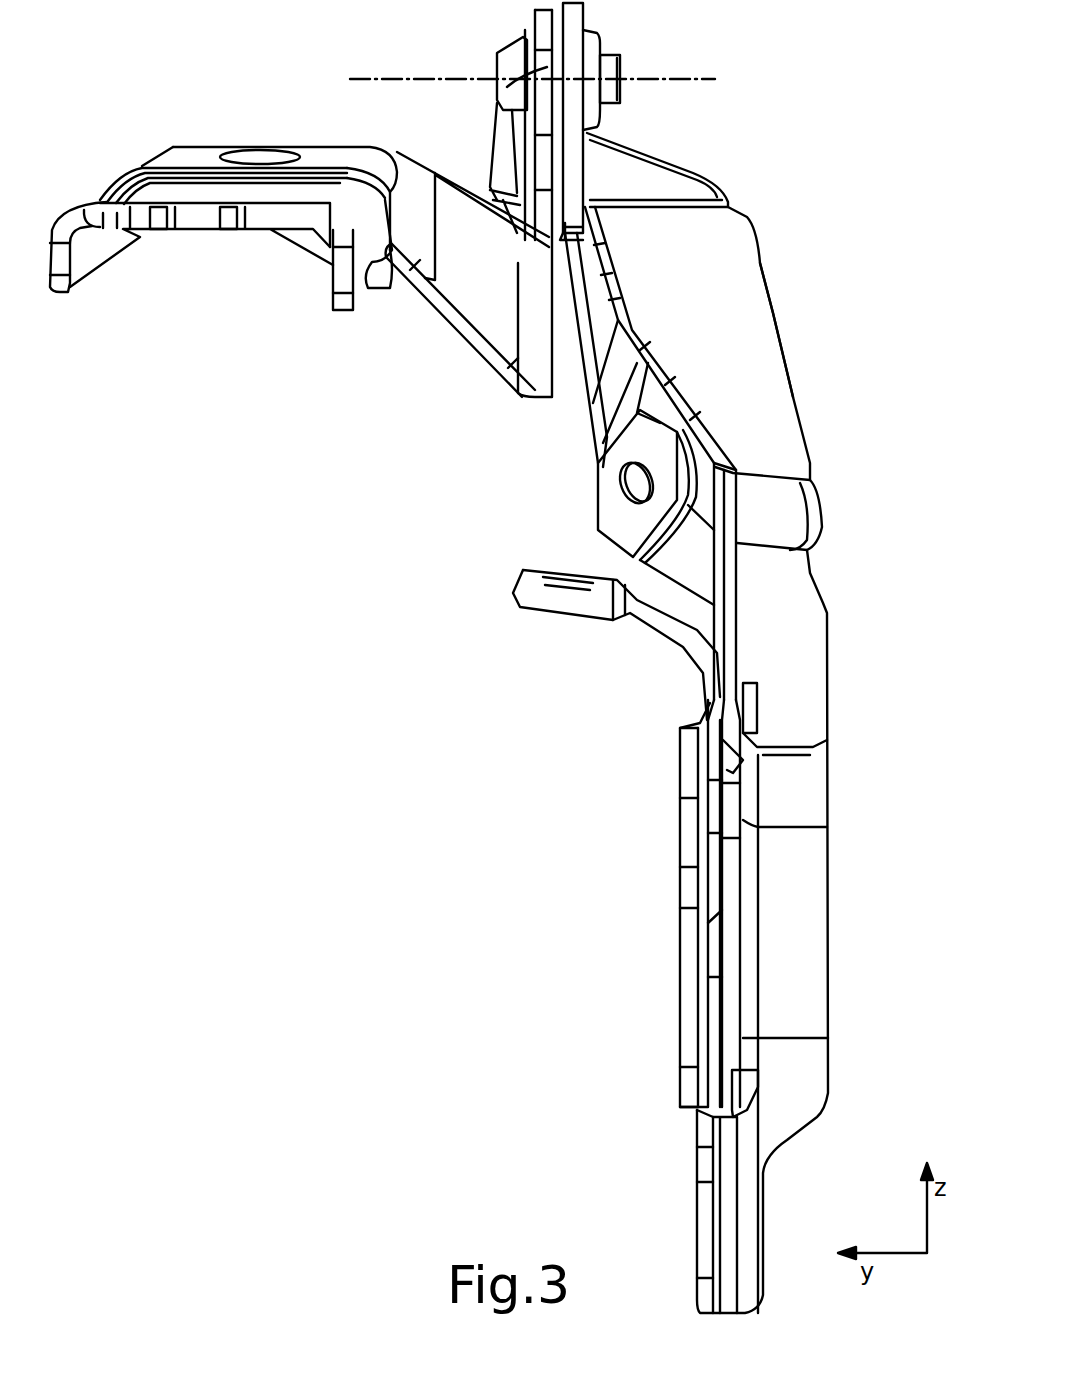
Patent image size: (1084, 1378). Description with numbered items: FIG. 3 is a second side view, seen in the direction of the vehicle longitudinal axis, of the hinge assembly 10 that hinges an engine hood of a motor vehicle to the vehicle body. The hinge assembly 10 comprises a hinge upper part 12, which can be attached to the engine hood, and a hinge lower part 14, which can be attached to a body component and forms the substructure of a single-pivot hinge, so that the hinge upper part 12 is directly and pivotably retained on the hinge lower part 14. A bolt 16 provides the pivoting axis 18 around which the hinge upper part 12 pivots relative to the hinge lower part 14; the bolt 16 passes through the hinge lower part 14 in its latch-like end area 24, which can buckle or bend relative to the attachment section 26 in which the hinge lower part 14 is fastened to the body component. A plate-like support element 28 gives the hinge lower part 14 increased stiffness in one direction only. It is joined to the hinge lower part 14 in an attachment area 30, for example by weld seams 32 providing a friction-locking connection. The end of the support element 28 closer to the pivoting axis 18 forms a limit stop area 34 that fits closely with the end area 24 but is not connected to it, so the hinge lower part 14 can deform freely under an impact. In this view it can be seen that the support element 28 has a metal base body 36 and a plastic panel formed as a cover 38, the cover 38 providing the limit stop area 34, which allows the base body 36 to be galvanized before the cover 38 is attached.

The hinge assembly 10 is at (238, 125).
The hinge upper part 12 is at (267, 187).
The hinge lower part 14 is at (667, 892).
The bolt 16 is at (620, 70).
The pivoting axis 18 is at (377, 80).
The end area 24 is at (575, 133).
The attachment section 26 is at (750, 1017).
The support element 28 is at (742, 453).
The attachment area 30 is at (765, 677).
The weld seams 32 is at (720, 700).
The limit stop area 34 is at (573, 170).
The base body 36 is at (770, 383).
The cover 38 is at (667, 178).